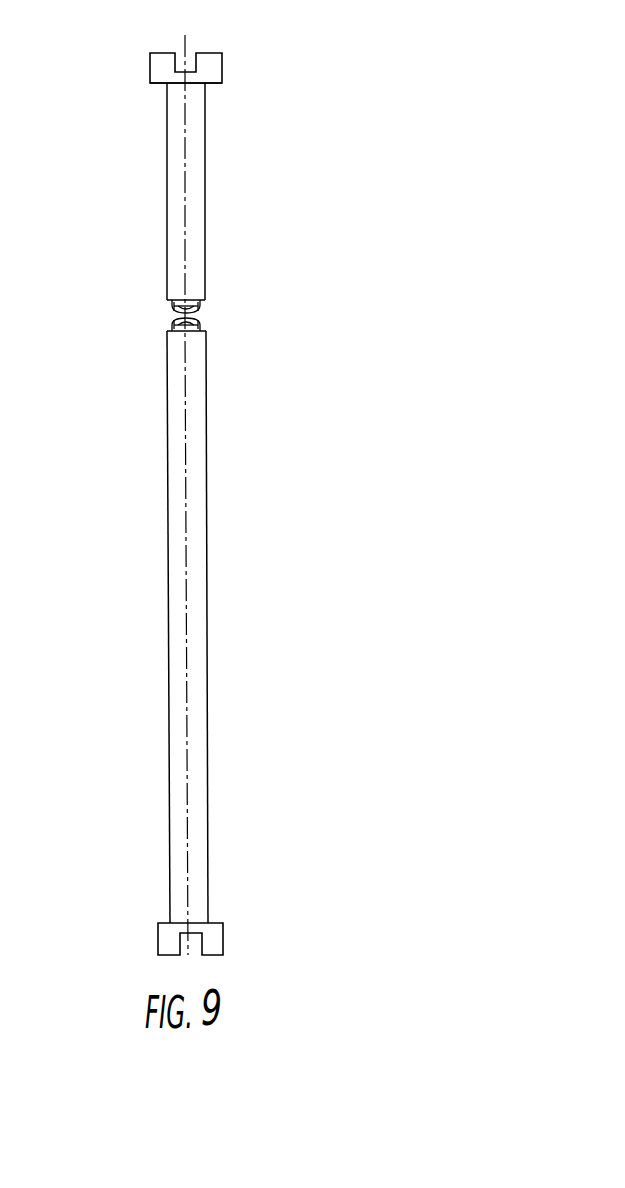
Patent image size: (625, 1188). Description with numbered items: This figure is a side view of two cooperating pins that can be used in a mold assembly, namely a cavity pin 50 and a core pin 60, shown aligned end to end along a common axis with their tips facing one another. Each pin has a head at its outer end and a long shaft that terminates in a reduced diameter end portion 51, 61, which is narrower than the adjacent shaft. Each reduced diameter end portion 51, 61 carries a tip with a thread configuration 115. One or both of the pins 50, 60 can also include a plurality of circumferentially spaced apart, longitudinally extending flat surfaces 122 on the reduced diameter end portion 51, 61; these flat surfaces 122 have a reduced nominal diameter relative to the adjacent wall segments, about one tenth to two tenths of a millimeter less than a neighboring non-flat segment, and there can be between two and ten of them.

The cavity pin 50 is at (205, 148).
The reduced diameter end portion 51 is at (140, 310).
The core pin 60 is at (206, 462).
The reduced diameter end portion 61 is at (215, 323).
The thread configuration 115 is at (175, 312).
The flat surfaces 122 is at (200, 306).